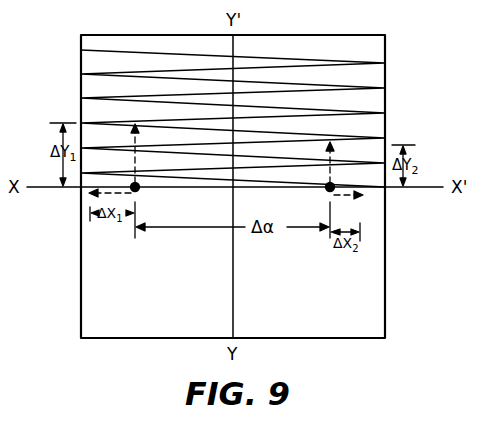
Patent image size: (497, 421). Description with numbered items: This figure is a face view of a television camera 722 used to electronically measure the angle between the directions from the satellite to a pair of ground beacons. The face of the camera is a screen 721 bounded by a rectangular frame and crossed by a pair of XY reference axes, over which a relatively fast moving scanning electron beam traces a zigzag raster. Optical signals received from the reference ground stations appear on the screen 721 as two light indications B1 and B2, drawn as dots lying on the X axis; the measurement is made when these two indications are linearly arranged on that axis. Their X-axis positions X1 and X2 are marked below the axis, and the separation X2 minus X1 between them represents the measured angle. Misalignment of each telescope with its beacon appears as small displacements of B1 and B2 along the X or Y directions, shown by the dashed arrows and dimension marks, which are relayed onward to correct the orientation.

The screen 721 is at (373, 316).
The television camera 722 is at (387, 287).
The reference ground station signal indication B1 is at (148, 197).
The reference ground station signal indication B2 is at (317, 197).
The X-axis position of first beacon indication X1 is at (133, 233).
The X-axis position of second beacon indication X2 is at (328, 234).